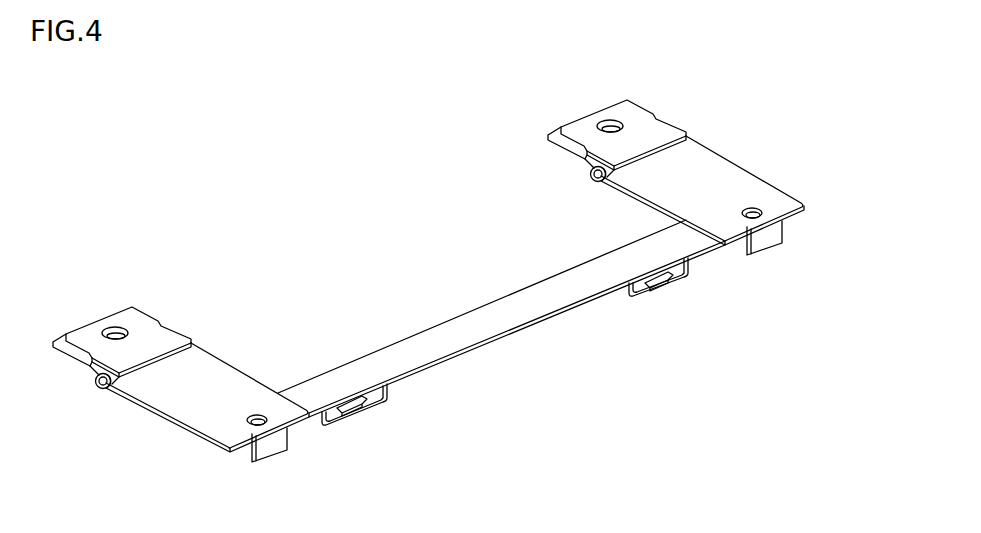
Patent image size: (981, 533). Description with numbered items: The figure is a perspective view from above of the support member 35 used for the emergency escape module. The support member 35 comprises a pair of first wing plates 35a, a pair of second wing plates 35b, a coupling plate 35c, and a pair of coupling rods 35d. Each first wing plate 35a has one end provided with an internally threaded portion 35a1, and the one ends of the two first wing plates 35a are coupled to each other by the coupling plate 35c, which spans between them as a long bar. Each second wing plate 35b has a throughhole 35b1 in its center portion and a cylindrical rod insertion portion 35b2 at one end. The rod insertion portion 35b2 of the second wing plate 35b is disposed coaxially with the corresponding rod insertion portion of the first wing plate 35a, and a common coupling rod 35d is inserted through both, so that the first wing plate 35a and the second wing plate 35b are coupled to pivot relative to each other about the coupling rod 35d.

The support member 35 is at (428, 282).
The first wing plate 35a is at (222, 384).
The internally threaded portion 35a1 is at (262, 425).
The second wing plate 35b is at (142, 330).
The throughhole 35b1 is at (114, 327).
The rod insertion portion 35b2 is at (121, 391).
The coupling plate 35c is at (476, 326).
The coupling rod 35d is at (98, 385).